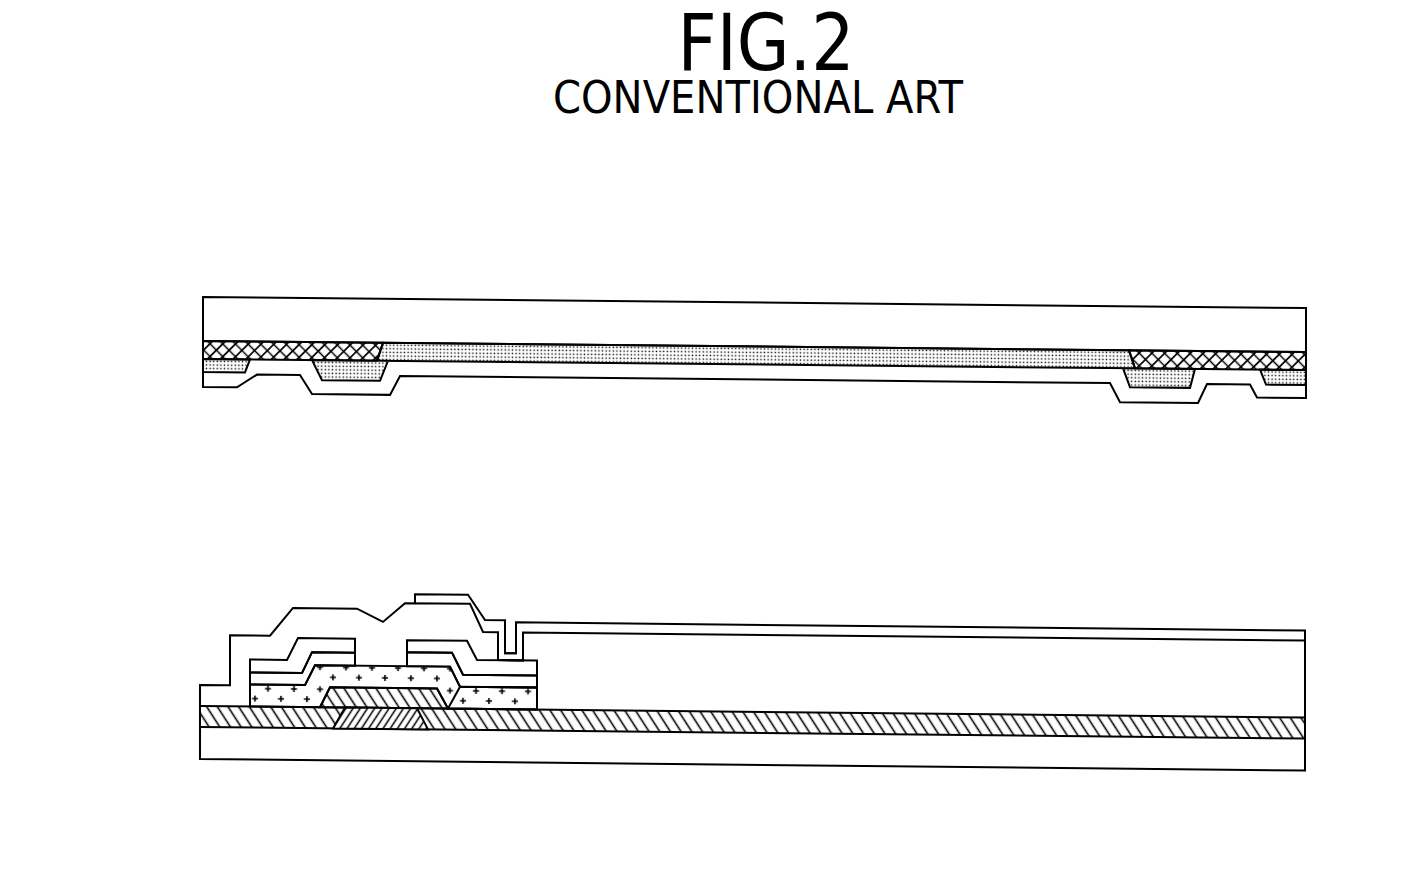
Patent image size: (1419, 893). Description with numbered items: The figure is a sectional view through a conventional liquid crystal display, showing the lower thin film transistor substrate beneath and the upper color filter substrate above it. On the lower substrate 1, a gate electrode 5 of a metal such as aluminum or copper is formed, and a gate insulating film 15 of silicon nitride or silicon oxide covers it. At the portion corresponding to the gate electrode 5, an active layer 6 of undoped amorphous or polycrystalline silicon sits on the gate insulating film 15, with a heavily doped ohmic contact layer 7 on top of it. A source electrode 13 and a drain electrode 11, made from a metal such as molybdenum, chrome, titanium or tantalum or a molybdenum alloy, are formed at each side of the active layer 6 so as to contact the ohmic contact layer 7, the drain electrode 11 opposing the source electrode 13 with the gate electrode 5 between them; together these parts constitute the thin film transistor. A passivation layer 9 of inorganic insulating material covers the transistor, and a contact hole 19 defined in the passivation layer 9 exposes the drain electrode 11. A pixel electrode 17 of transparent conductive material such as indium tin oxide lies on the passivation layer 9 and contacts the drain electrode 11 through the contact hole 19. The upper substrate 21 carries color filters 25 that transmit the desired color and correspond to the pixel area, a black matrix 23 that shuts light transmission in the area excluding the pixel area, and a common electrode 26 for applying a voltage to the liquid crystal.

The lower substrate 1 is at (1293, 762).
The gate electrode 5 is at (368, 730).
The active layer 6 is at (513, 698).
The ohmic contact layer 7 is at (427, 653).
The passivation layer 9 is at (1295, 661).
The drain electrode 11 is at (408, 643).
The source electrode 13 is at (258, 661).
The gate insulating film 15 is at (1297, 728).
The pixel electrode 17 is at (1198, 632).
The contact hole 19 is at (509, 627).
The upper substrate 21 is at (1296, 316).
The black matrix 23 is at (1307, 357).
The color filters 25 is at (1307, 378).
The common electrode 26 is at (1279, 391).